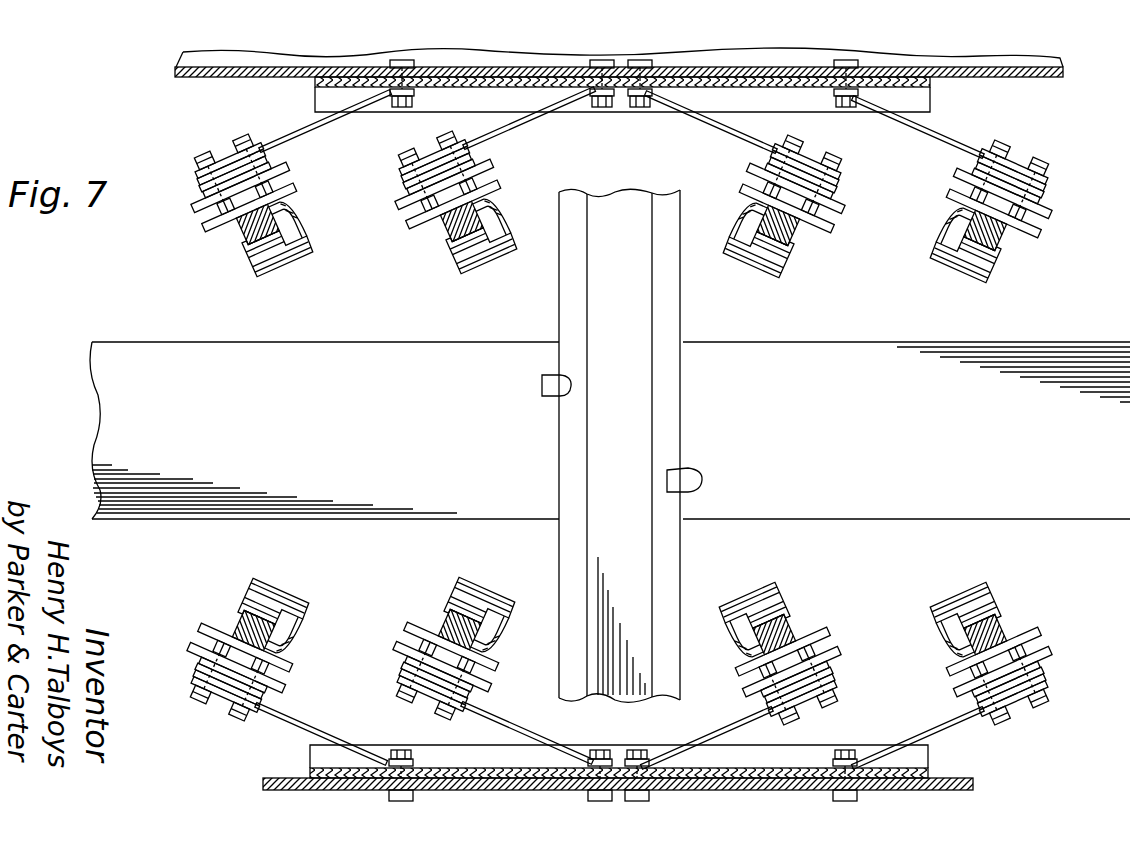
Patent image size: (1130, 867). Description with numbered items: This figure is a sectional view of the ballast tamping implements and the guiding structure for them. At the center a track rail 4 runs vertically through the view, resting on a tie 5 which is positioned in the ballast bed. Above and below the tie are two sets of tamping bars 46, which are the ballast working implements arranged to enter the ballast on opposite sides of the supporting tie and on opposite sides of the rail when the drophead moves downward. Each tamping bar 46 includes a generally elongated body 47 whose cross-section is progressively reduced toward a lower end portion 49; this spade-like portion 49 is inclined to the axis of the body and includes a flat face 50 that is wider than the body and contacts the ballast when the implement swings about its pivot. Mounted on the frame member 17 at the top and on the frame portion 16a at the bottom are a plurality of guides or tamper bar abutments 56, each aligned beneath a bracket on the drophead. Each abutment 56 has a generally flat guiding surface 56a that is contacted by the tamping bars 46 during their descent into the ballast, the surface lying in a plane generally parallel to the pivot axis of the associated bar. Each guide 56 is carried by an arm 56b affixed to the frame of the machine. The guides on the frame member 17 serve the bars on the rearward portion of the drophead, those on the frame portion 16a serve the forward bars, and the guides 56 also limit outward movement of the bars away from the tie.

The track rail 4 is at (565, 303).
The tie 5 is at (365, 345).
The frame member 17 is at (1066, 68).
The frame portion 16a is at (975, 786).
The tamping bar 46 is at (265, 248).
The body 47 is at (283, 214).
The lower end portion 49 is at (297, 227).
The flat face 50 is at (293, 262).
The tamper bar abutment 56 is at (198, 227).
The guiding surface 56a is at (222, 238).
The arm 56b is at (309, 128).